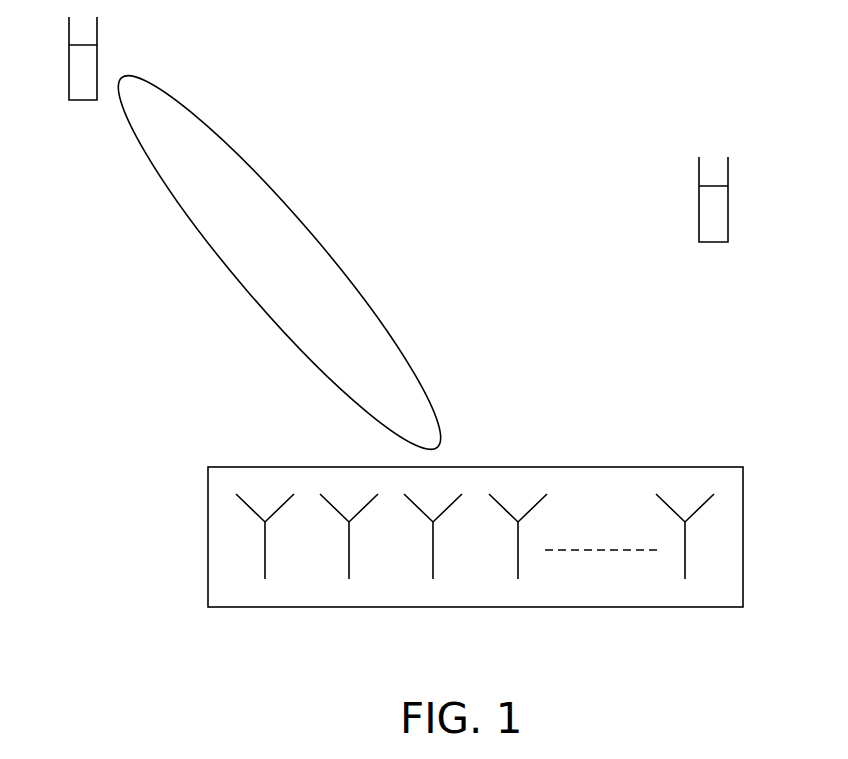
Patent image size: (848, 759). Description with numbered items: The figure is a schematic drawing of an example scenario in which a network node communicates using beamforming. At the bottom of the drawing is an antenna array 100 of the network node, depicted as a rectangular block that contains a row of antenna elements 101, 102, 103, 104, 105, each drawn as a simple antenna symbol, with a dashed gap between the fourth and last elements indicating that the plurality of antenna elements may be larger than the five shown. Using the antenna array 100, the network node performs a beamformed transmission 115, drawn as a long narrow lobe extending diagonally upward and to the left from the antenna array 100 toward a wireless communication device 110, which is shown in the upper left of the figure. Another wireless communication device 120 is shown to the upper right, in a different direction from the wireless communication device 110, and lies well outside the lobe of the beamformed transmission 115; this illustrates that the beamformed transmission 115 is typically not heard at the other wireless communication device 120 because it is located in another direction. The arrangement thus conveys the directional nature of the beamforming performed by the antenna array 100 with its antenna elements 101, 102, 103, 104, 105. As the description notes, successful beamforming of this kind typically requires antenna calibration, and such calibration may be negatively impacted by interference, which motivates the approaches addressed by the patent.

The antenna array 100 is at (475, 537).
The antenna element 101 is at (263, 552).
The antenna element 102 is at (347, 552).
The antenna element 103 is at (431, 552).
The antenna element 104 is at (516, 552).
The antenna element 105 is at (683, 552).
The wireless communication device 110 is at (69, 72).
The beamformed transmission 115 is at (227, 270).
The another wireless communication device 120 is at (699, 215).